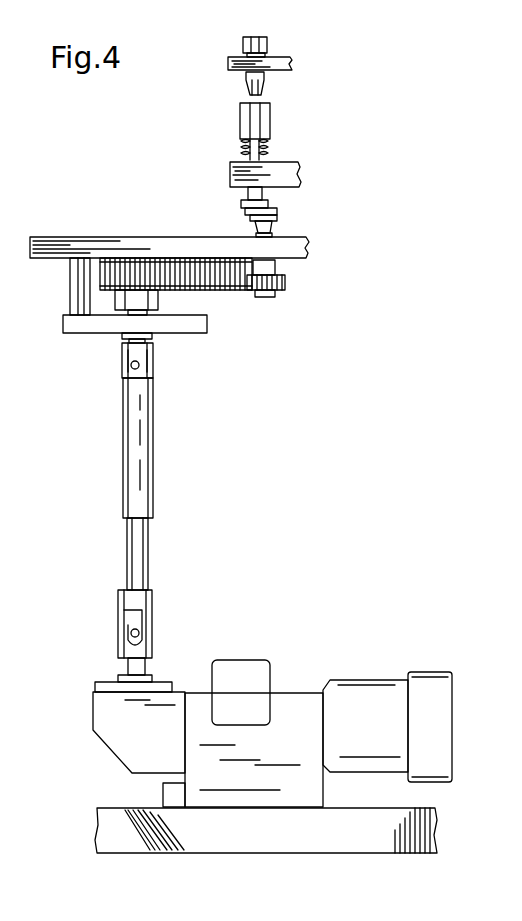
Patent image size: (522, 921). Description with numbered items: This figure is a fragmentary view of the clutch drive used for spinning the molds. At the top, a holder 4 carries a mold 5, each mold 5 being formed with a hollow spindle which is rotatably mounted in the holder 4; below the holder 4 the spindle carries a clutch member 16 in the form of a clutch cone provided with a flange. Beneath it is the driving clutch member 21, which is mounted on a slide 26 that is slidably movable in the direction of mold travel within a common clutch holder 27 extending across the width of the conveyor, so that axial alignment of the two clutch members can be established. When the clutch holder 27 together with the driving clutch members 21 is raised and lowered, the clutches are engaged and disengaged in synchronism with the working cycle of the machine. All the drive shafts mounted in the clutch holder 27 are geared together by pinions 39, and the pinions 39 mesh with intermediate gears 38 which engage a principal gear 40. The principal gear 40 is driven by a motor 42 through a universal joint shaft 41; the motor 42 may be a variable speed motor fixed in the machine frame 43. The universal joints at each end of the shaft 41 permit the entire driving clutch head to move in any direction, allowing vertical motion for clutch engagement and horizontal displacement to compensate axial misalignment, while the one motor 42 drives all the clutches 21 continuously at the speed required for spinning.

The holder 4 is at (280, 63).
The mold 5 is at (257, 44).
The clutch member 16 is at (266, 84).
The driving clutch member 21 is at (253, 124).
The slide 26 is at (285, 174).
The clutch holder 27 is at (300, 250).
The intermediate gear 38 is at (188, 257).
The pinion 39 is at (286, 287).
The principal gear 40 is at (115, 262).
The universal joint shaft 41 is at (131, 468).
The motor 42 is at (237, 668).
The machine frame 43 is at (262, 833).